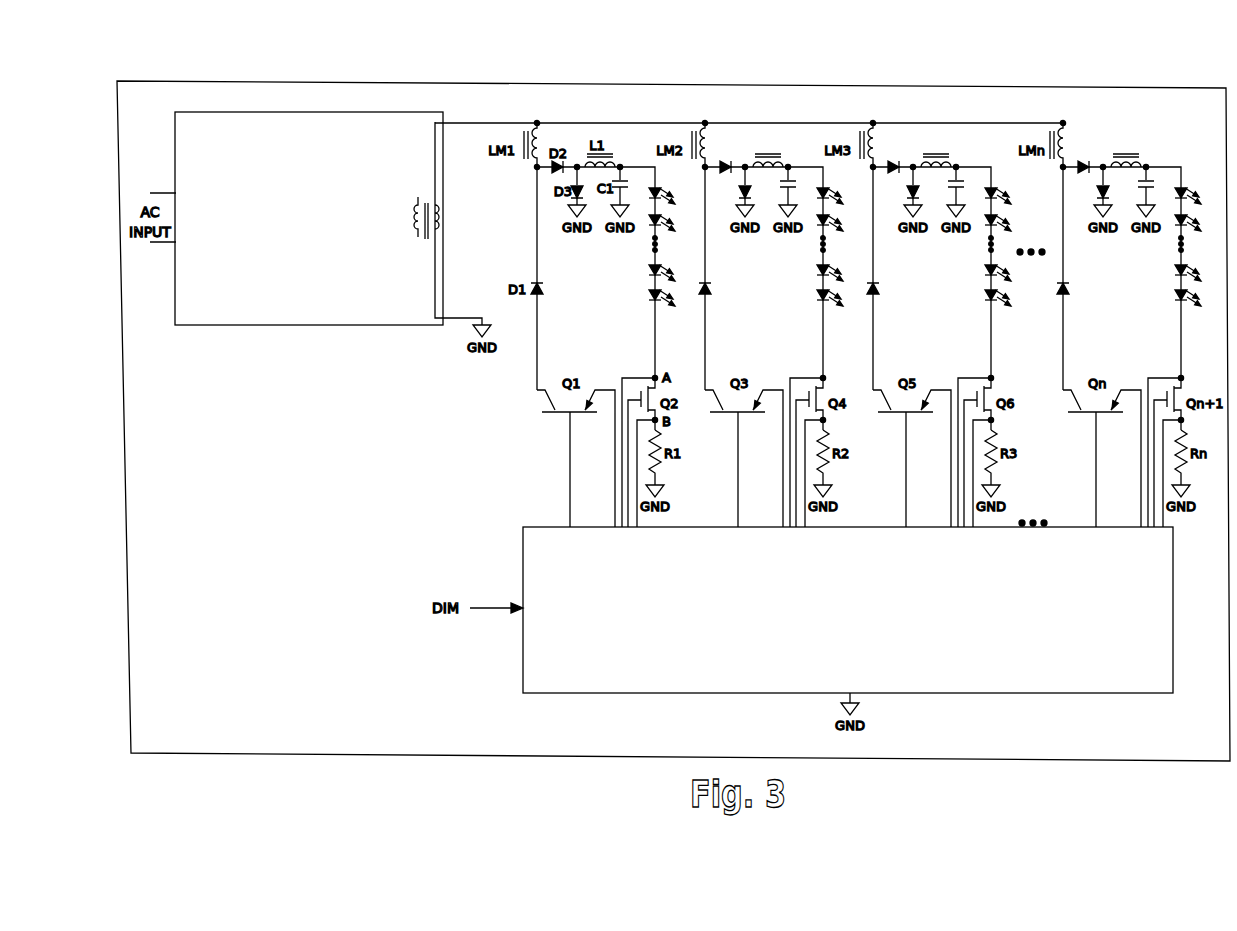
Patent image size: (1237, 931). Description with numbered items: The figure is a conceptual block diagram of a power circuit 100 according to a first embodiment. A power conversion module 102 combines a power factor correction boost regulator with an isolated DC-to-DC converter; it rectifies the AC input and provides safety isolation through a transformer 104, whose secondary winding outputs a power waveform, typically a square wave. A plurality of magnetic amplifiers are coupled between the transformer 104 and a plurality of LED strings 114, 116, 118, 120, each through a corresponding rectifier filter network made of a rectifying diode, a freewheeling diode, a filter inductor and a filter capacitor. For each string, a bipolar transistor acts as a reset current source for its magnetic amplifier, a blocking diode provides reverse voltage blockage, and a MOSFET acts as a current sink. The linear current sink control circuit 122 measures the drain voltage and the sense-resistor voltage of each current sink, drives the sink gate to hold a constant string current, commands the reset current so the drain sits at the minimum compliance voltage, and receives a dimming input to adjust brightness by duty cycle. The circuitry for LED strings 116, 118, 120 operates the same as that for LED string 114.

The power circuit 100 is at (935, 87).
The power conversion module 102 is at (275, 111).
The transformer 104 is at (436, 190).
The LED string 114 is at (681, 214).
The LED string 116 is at (849, 214).
The LED string 118 is at (1020, 214).
The LED string 120 is at (1200, 214).
The linear current sink control circuit 122 is at (523, 557).